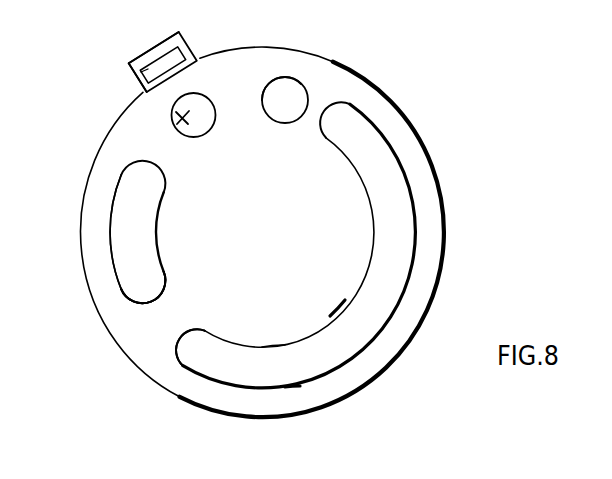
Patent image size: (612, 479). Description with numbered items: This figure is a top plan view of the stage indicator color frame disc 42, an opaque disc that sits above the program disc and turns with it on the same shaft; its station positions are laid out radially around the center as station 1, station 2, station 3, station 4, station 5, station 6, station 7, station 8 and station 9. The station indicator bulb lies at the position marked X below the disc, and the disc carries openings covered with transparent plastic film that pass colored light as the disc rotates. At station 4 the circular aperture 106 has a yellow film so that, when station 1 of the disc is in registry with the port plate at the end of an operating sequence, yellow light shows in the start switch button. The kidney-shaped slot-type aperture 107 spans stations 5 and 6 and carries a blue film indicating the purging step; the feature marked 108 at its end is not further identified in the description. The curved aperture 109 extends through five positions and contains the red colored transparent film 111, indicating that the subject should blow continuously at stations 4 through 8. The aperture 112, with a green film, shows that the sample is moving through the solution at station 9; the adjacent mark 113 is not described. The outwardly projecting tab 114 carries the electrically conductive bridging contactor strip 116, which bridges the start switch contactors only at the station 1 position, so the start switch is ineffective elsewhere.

The first station 1 is at (262, 232).
The second station 2 is at (262, 232).
The third station 3 is at (262, 232).
The fourth station 4 is at (262, 232).
The fifth station 5 is at (262, 232).
The sixth station 6 is at (262, 232).
The seventh station 7 is at (262, 232).
The eighth station 8 is at (262, 232).
The ninth station 9 is at (262, 232).
The stage indicator color frame disc 42 is at (430, 302).
The aperture 106 is at (200, 93).
The kidney-shaped slot-type aperture 107 is at (110, 225).
The rounded end of left slot 108 is at (140, 290).
The curved aperture 109 is at (218, 384).
The red colored transparent film 111 is at (277, 378).
The aperture 112 is at (302, 82).
The aperture 113 is at (293, 100).
The outwardly projecting tab 114 is at (129, 63).
The electrically conductive bridging contactor strip 116 is at (133, 73).